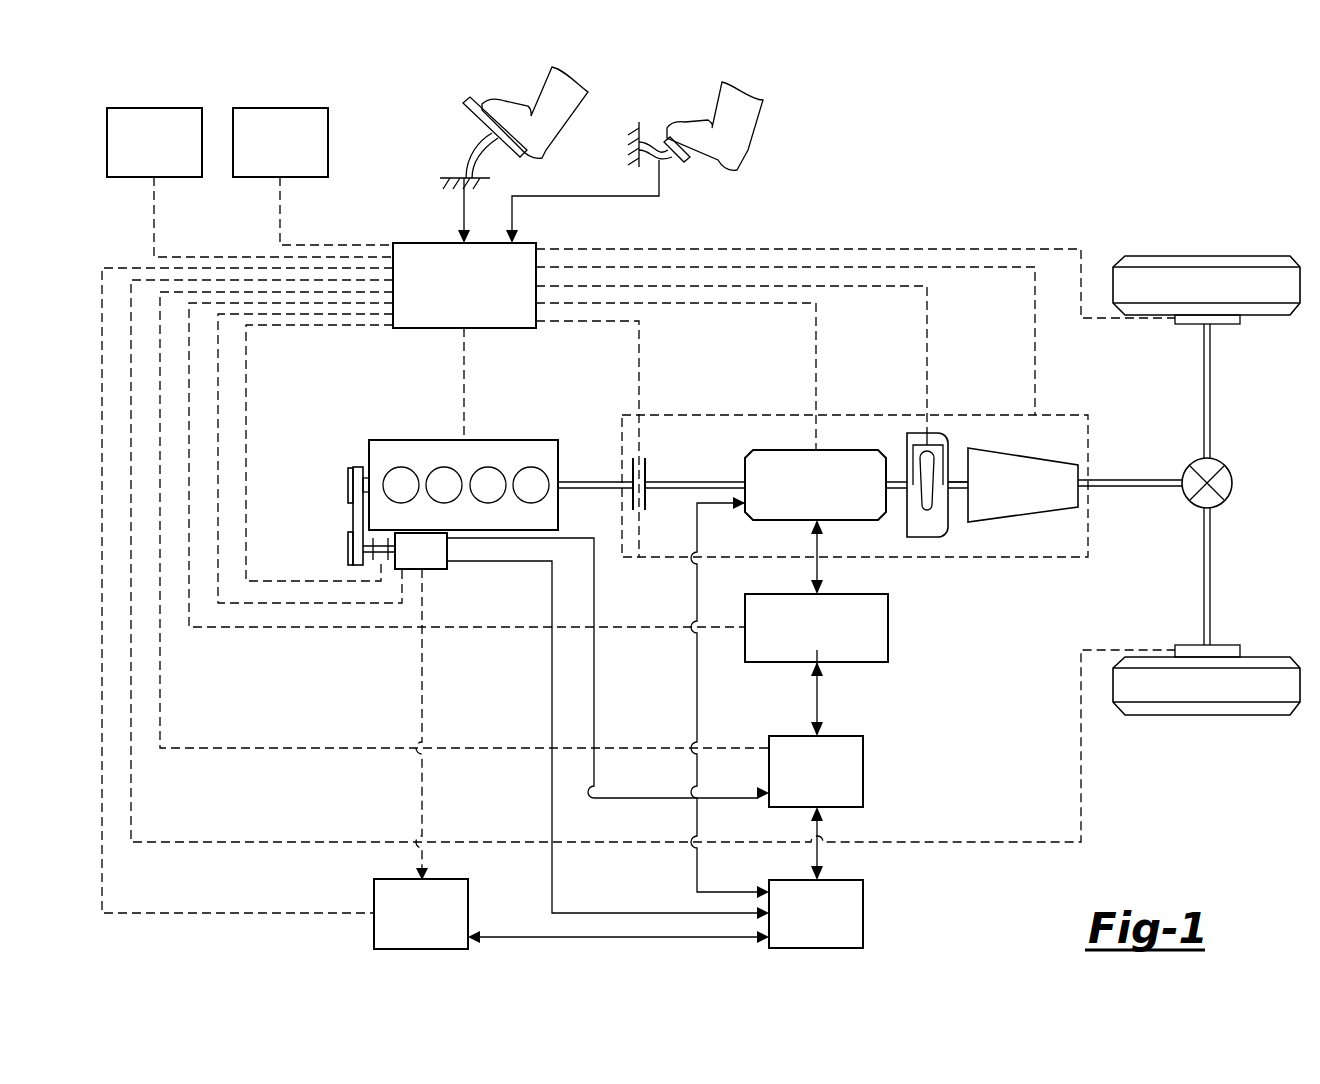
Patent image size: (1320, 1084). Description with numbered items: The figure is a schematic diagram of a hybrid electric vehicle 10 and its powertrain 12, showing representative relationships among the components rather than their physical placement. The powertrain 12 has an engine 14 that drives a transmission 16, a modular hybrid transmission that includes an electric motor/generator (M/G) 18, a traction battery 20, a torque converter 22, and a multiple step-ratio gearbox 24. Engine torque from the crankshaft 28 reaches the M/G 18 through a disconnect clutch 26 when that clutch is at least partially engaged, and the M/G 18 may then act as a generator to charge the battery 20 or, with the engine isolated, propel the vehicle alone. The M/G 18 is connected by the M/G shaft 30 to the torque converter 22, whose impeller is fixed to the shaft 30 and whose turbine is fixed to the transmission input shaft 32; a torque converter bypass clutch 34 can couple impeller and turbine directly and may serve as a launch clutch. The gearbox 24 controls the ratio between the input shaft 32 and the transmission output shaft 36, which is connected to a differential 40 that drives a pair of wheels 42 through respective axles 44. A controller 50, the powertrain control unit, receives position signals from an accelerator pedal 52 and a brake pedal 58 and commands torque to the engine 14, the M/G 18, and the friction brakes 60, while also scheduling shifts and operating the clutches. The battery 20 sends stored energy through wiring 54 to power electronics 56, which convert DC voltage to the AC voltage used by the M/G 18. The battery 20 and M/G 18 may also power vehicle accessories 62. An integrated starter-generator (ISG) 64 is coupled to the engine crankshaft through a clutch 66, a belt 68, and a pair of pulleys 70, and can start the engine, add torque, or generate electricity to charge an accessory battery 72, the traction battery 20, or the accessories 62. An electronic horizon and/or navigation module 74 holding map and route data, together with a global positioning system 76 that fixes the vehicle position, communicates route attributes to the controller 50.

The hybrid electric vehicle 10 is at (1098, 176).
The powertrain 12 is at (520, 668).
The engine 14 is at (392, 440).
The transmission 16 is at (858, 415).
The electric motor/generator (M/G) 18 is at (793, 450).
The traction battery 20 is at (863, 772).
The torque converter 22 is at (930, 538).
The gearbox 24 is at (1015, 516).
The disconnect clutch 26 is at (630, 498).
The crankshaft 28 is at (368, 480).
The M/G shaft 30 is at (720, 481).
The transmission input shaft 32 is at (956, 478).
The torque converter bypass clutch 34 is at (928, 436).
The transmission output shaft 36 is at (1145, 480).
The differential 40 is at (1232, 485).
The wheels 42 is at (1208, 256).
The axles 44 is at (1213, 387).
The controller 50 is at (503, 330).
The accelerator pedal 52 is at (463, 118).
The wiring 54 is at (817, 698).
The power electronics 56 is at (888, 628).
The brake pedal 58 is at (688, 162).
The friction brakes 60 is at (1240, 320).
The vehicle accessories 62 is at (863, 913).
The integrated starter-generator (ISG) 64 is at (437, 570).
The clutch 66 is at (386, 562).
The belt 68 is at (353, 520).
The pulleys 70 is at (348, 487).
The accessory battery 72 is at (468, 913).
The electronic horizon and/or navigation module 74 is at (155, 107).
The global positioning system (GPS) 76 is at (279, 107).